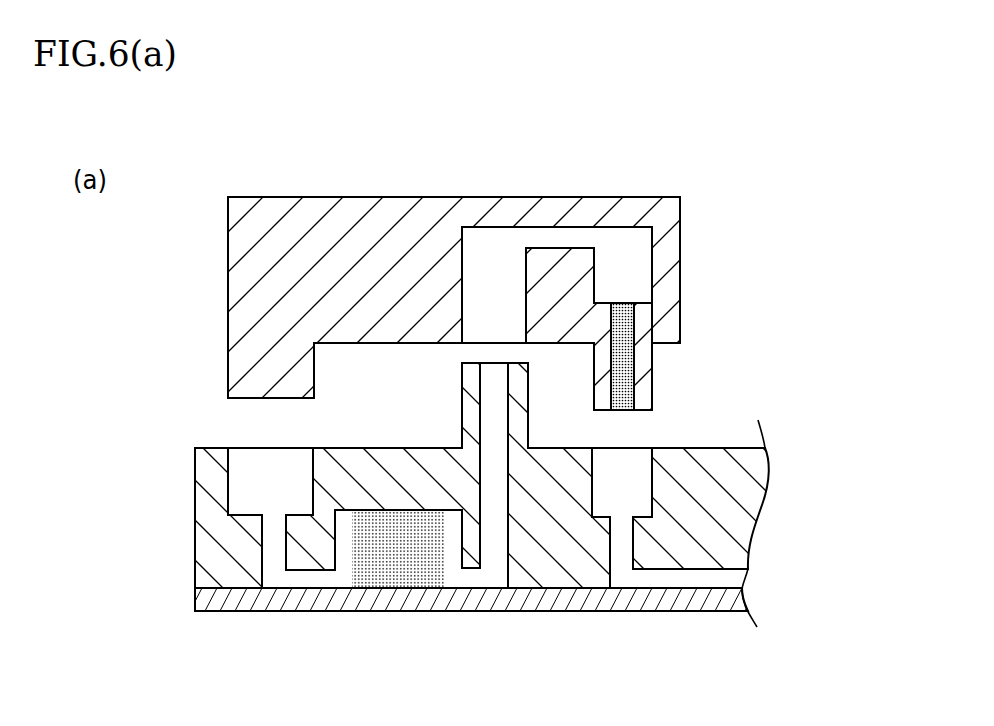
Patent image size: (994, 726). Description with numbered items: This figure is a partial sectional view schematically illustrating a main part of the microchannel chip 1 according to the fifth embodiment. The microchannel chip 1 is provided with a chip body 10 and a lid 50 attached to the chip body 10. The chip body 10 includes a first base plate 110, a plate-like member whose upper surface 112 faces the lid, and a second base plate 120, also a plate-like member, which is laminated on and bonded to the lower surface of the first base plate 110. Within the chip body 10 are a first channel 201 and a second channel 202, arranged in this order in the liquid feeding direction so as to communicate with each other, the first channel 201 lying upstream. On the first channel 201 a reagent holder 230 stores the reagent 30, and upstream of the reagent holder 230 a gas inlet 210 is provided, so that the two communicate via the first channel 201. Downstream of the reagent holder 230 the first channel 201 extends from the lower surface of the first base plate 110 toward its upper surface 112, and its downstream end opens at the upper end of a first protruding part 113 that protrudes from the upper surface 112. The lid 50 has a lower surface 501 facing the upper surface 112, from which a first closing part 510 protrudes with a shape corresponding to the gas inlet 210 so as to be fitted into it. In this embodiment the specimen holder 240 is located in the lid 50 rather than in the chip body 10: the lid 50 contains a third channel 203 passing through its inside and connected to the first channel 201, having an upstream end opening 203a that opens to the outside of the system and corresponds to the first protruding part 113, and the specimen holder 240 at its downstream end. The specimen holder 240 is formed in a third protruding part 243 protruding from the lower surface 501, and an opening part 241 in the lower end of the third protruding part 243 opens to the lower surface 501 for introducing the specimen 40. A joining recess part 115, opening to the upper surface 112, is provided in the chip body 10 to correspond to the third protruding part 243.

The microchannel chip 1 is at (193, 281).
The chip body 10 is at (105, 542).
The reagent 30 is at (393, 575).
The specimen 40 is at (618, 350).
The lid 50 is at (330, 200).
The first base plate 110 is at (212, 568).
The upper surface 112 is at (733, 447).
The first protruding part 113 is at (473, 412).
The joining recess part 115 is at (642, 448).
The second base plate 120 is at (207, 600).
The first channel 201 is at (303, 582).
The second channel 202 is at (660, 580).
The third channel 203 is at (553, 233).
The upstream end opening 203a is at (510, 338).
The gas inlet 210 is at (272, 478).
The reagent holder 230 is at (453, 578).
The specimen holder 240 is at (633, 375).
The opening part 241 is at (618, 410).
The third protruding part 243 is at (643, 395).
The lower surface 501 is at (393, 347).
The first closing part 510 is at (260, 390).